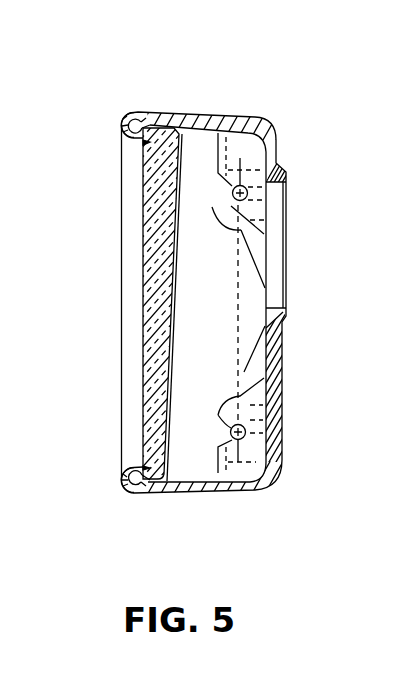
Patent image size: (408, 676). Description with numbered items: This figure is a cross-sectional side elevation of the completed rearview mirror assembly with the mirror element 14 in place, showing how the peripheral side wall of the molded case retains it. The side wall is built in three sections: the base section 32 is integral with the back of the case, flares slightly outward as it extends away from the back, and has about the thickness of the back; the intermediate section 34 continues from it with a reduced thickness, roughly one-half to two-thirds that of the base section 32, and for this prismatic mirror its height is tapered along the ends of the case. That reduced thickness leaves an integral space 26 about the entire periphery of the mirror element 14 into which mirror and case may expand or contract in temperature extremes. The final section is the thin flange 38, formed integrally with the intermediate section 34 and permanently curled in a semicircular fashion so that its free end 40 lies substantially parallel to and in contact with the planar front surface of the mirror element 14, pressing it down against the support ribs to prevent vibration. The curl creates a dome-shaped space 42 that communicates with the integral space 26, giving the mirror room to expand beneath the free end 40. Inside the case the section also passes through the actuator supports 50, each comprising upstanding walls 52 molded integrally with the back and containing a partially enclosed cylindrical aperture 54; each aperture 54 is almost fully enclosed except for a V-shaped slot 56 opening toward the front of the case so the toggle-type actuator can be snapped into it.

The mirror element 14 is at (141, 302).
The integral space 26 is at (147, 110).
The base section 32 is at (229, 123).
The intermediate section 34 is at (166, 112).
The flange 38 is at (127, 116).
The free end 40 is at (147, 139).
The dome-shaped space 42 is at (127, 128).
The actuator support 50 is at (236, 246).
The wall 52 is at (232, 154).
The cylindrical aperture 54 is at (232, 194).
The V-shaped slot 56 is at (216, 205).